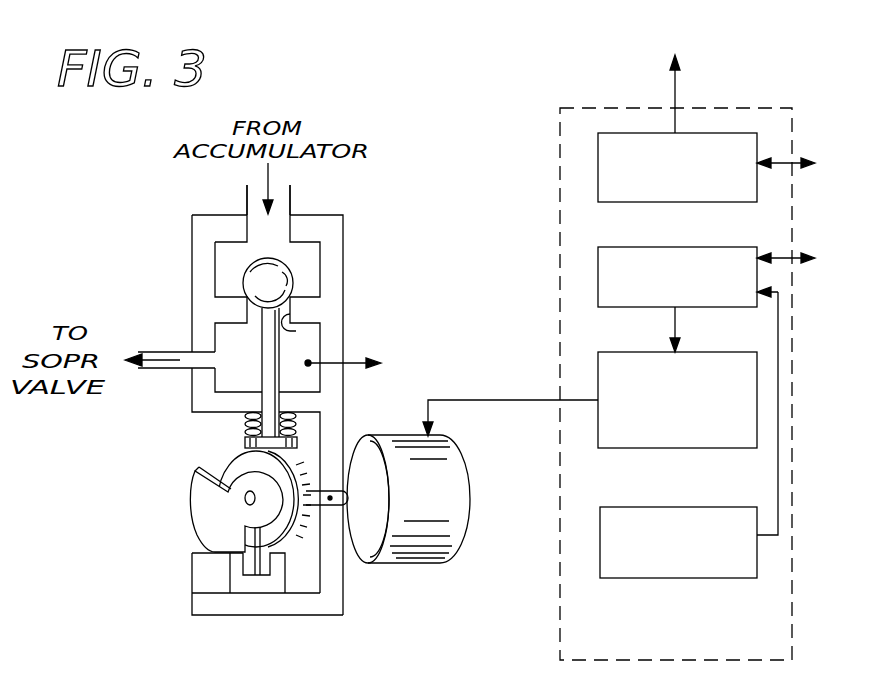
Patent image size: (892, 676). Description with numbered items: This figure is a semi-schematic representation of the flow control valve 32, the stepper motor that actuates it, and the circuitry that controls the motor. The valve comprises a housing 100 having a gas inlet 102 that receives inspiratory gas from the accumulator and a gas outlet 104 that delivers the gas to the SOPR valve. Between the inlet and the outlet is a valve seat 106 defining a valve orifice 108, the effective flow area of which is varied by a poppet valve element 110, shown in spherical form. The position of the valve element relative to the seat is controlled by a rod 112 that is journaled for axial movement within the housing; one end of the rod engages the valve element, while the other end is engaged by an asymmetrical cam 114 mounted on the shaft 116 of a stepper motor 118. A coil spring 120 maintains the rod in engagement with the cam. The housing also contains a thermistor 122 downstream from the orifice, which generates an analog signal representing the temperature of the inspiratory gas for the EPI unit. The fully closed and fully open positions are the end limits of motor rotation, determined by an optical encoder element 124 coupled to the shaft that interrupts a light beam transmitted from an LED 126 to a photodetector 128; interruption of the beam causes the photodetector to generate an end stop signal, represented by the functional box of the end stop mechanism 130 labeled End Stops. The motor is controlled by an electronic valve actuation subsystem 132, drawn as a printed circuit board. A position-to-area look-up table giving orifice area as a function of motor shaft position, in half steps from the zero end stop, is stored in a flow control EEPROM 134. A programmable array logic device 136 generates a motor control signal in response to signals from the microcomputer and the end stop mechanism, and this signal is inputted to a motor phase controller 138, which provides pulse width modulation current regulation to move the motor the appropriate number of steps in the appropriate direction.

The flow control valve 32 is at (366, 279).
The housing 100 is at (343, 222).
The gas inlet 102 is at (290, 186).
The gas outlet 104 is at (160, 350).
The valve seat 106 is at (243, 298).
The valve orifice 108 is at (295, 326).
The poppet valve element 110 is at (248, 272).
The rod 112 is at (264, 368).
The asymmetrical cam 114 is at (237, 466).
The shaft 116 is at (332, 506).
The stepper motor 118 is at (461, 501).
The coil spring 120 is at (293, 429).
The thermistor 122 is at (308, 361).
The optical encoder element 124 is at (197, 515).
The LED 126 is at (203, 575).
The photodetector 128 is at (277, 577).
The end stop mechanism 130 is at (702, 578).
The electronic valve actuation subsystem 132 is at (549, 112).
The flow control EEPROM 134 is at (737, 132).
The programmable array logic device 136 is at (598, 272).
The motor phase controller 138 is at (757, 390).